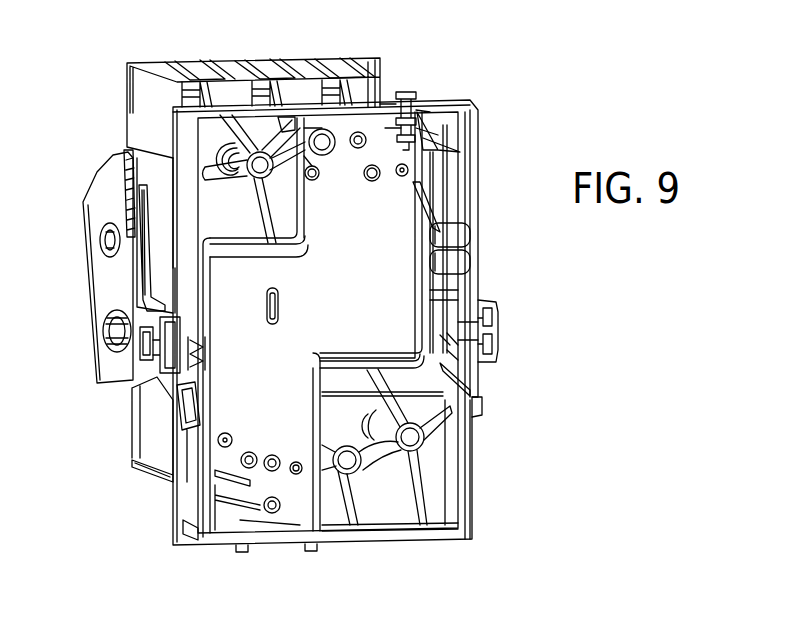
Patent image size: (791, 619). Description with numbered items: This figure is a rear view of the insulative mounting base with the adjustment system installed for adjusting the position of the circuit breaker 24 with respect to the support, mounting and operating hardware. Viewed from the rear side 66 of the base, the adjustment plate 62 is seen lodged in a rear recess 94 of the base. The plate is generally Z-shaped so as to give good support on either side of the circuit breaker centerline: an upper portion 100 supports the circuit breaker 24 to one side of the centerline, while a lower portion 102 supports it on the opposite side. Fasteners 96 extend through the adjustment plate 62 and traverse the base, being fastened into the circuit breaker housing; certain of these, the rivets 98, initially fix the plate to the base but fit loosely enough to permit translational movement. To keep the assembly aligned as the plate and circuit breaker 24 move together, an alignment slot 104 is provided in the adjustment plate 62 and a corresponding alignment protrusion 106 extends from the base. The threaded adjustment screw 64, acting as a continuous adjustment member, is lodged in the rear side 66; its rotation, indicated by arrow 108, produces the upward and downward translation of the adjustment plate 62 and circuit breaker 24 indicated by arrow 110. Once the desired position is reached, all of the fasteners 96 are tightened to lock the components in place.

The circuit breaker 24 is at (160, 178).
The adjustment plate 62 is at (390, 330).
The threaded adjustment screw 64 is at (402, 102).
The rear side 66 is at (506, 284).
The rear recess 94 is at (422, 228).
The fasteners 96 is at (380, 172).
The rivets 98 is at (408, 170).
The upper portion 100 is at (411, 229).
The lower portion 102 is at (286, 426).
The alignment slot 104 is at (272, 324).
The alignment protrusion 106 is at (267, 306).
The arrow 108 is at (428, 81).
The arrow 110 is at (352, 248).